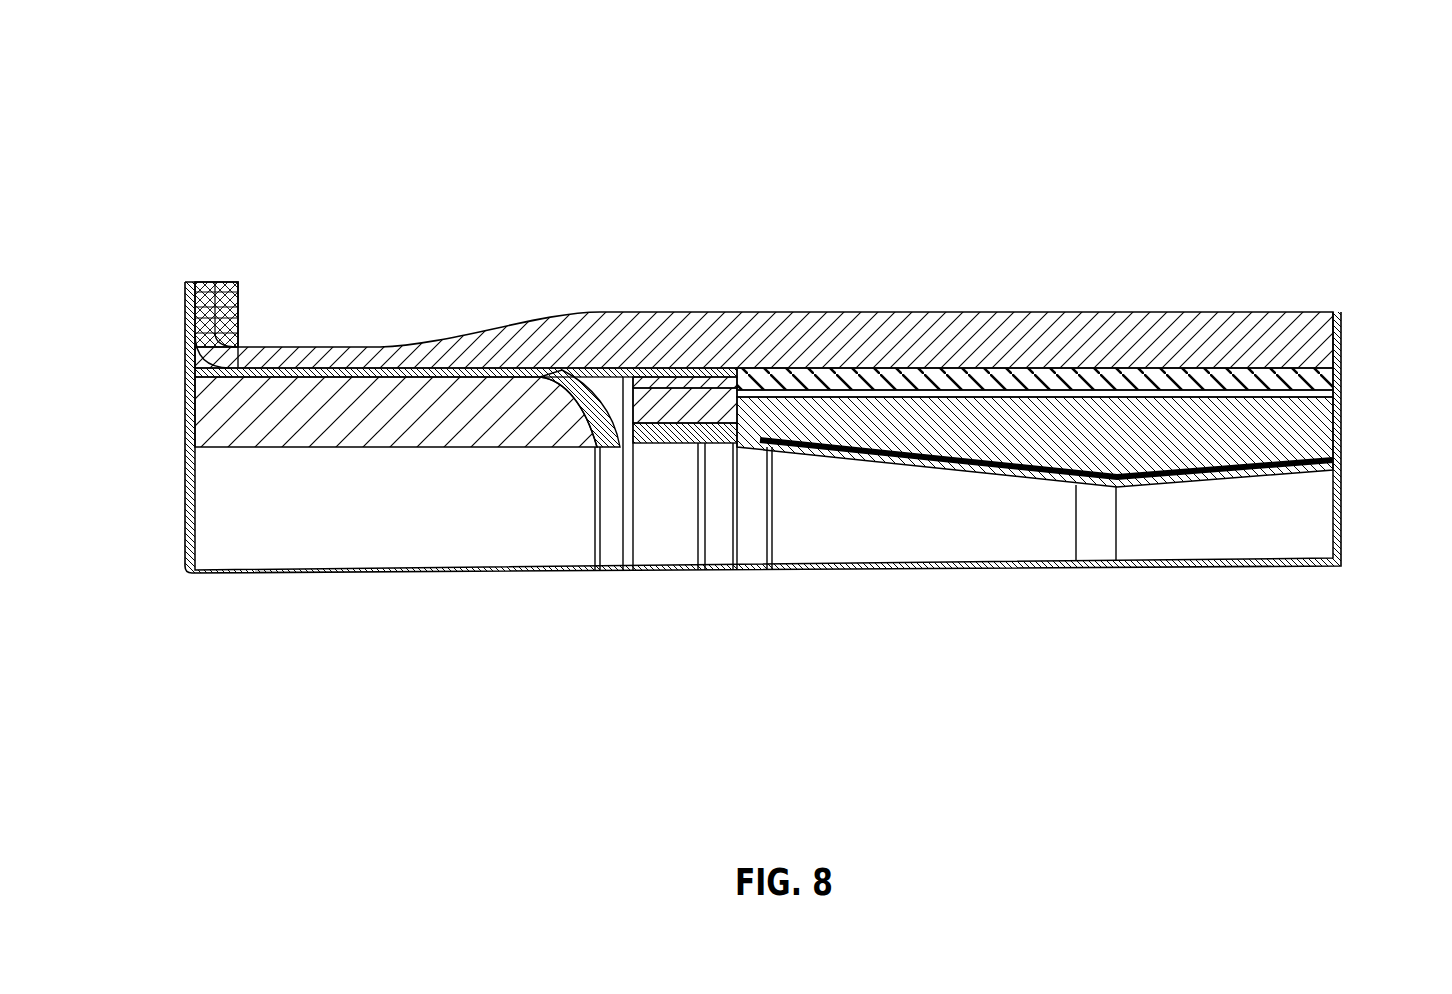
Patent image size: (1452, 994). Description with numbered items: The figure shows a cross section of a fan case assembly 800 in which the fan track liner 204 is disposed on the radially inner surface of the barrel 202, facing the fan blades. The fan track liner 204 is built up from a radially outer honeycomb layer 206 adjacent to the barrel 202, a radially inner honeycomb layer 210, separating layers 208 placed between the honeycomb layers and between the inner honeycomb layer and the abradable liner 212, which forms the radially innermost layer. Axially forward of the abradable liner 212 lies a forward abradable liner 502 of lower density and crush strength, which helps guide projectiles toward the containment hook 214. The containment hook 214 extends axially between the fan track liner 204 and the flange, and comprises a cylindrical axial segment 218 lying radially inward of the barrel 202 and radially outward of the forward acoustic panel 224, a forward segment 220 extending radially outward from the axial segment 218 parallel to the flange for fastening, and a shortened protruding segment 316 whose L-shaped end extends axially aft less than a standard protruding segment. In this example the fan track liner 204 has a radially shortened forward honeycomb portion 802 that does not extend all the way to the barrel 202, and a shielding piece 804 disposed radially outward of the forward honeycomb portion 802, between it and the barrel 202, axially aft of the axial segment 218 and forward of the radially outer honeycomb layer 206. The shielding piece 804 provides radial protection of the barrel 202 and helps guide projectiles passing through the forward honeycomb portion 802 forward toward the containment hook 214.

The sensor assembly 800 is at (781, 185).
The barrel 202 is at (930, 332).
The fan track liner 204 is at (1340, 413).
The radially outer honeycomb layer 206 is at (1043, 378).
The separating layer 208 is at (1222, 457).
The radially inner honeycomb layer 210 is at (1265, 418).
The abradable liner 212 is at (1023, 465).
The containment hook 214 is at (442, 405).
The axial segment 218 is at (330, 372).
The forward segment 220 is at (192, 318).
The forward acoustic panel 224 is at (210, 412).
The shortened protruding segment 316 is at (583, 405).
The forward abradable liner 502 is at (697, 440).
The forward honeycomb portion 802 is at (668, 405).
The shielding piece 804 is at (713, 378).